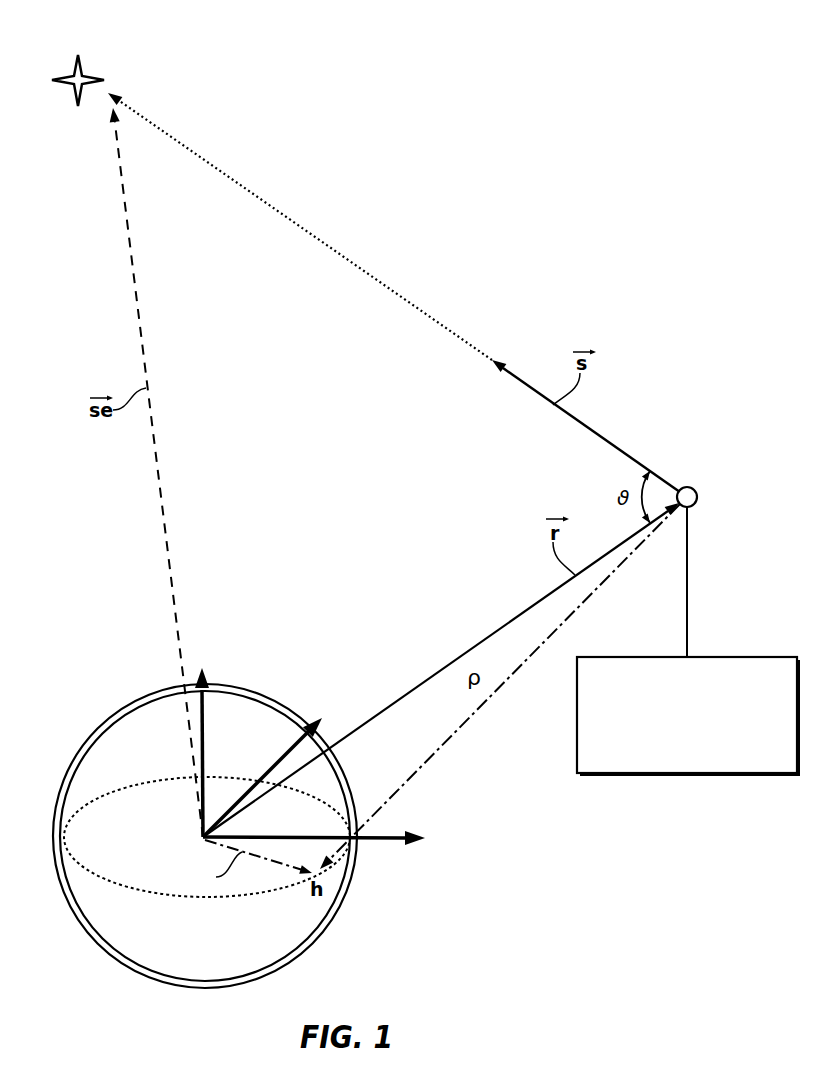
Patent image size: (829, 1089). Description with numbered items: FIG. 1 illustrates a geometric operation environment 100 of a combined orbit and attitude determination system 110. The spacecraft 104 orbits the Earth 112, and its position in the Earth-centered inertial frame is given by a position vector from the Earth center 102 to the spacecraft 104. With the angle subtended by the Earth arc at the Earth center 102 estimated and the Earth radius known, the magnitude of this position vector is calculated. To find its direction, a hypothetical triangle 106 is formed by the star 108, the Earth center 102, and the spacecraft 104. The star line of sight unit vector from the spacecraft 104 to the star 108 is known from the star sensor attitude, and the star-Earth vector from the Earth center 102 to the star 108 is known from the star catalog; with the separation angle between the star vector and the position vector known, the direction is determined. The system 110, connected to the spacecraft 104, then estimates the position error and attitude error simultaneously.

The geometric operation environment 100 is at (604, 134).
The Earth center 102 is at (200, 834).
The spacecraft 104 is at (692, 488).
The hypothetical triangle 106 is at (381, 310).
The star 108 is at (68, 75).
The combined orbit and attitude determination system 110 is at (598, 776).
The Earth 112 is at (180, 990).